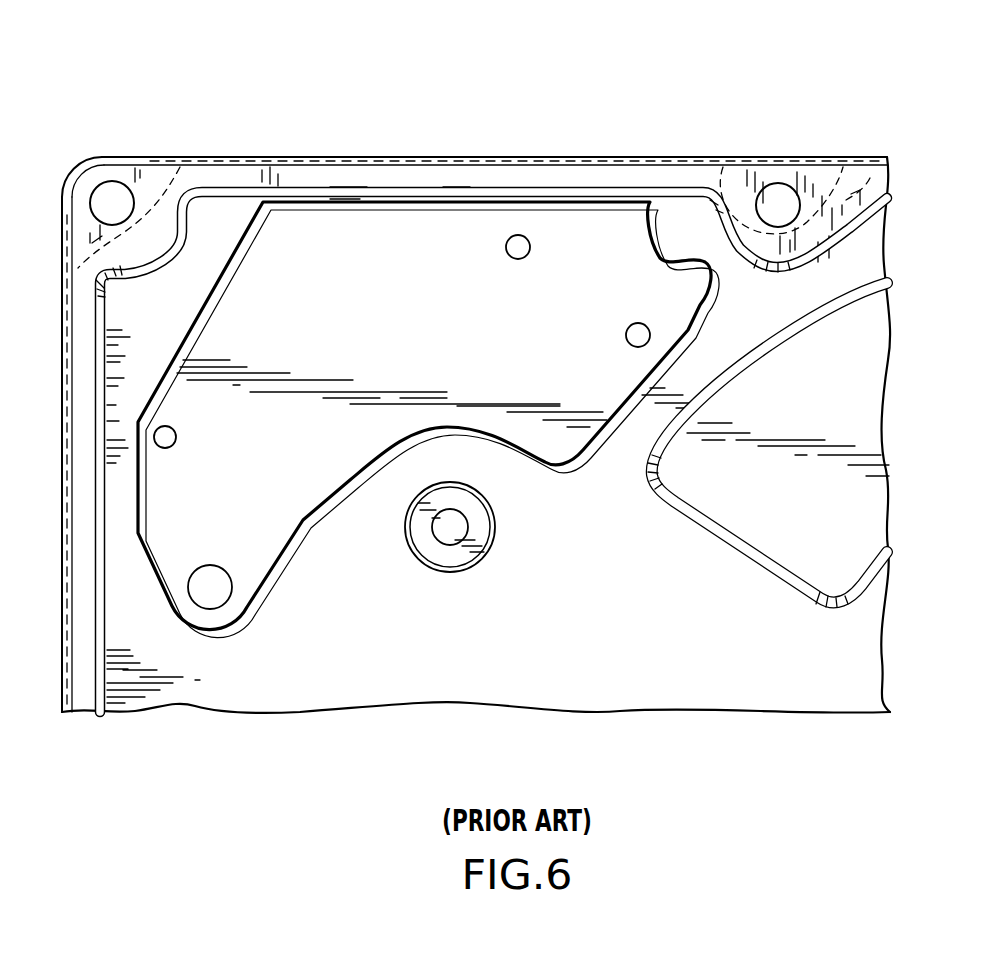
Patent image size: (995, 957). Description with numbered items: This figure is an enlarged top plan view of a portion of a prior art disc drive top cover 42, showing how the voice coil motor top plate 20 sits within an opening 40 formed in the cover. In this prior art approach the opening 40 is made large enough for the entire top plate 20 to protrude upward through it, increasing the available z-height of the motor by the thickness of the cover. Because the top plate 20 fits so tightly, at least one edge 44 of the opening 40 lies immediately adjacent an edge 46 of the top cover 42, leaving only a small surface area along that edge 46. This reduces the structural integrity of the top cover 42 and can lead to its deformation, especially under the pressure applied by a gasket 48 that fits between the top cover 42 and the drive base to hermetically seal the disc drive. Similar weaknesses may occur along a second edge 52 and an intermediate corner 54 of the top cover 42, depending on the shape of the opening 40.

The top plate 20 is at (568, 233).
The opening 40 is at (288, 590).
The top cover 42 is at (695, 135).
The edge of the opening 44 is at (408, 203).
The edge of the top cover 46 is at (353, 157).
The gasket 48 is at (173, 173).
The second edge 52 is at (55, 257).
The intermediate corner 54 is at (95, 157).